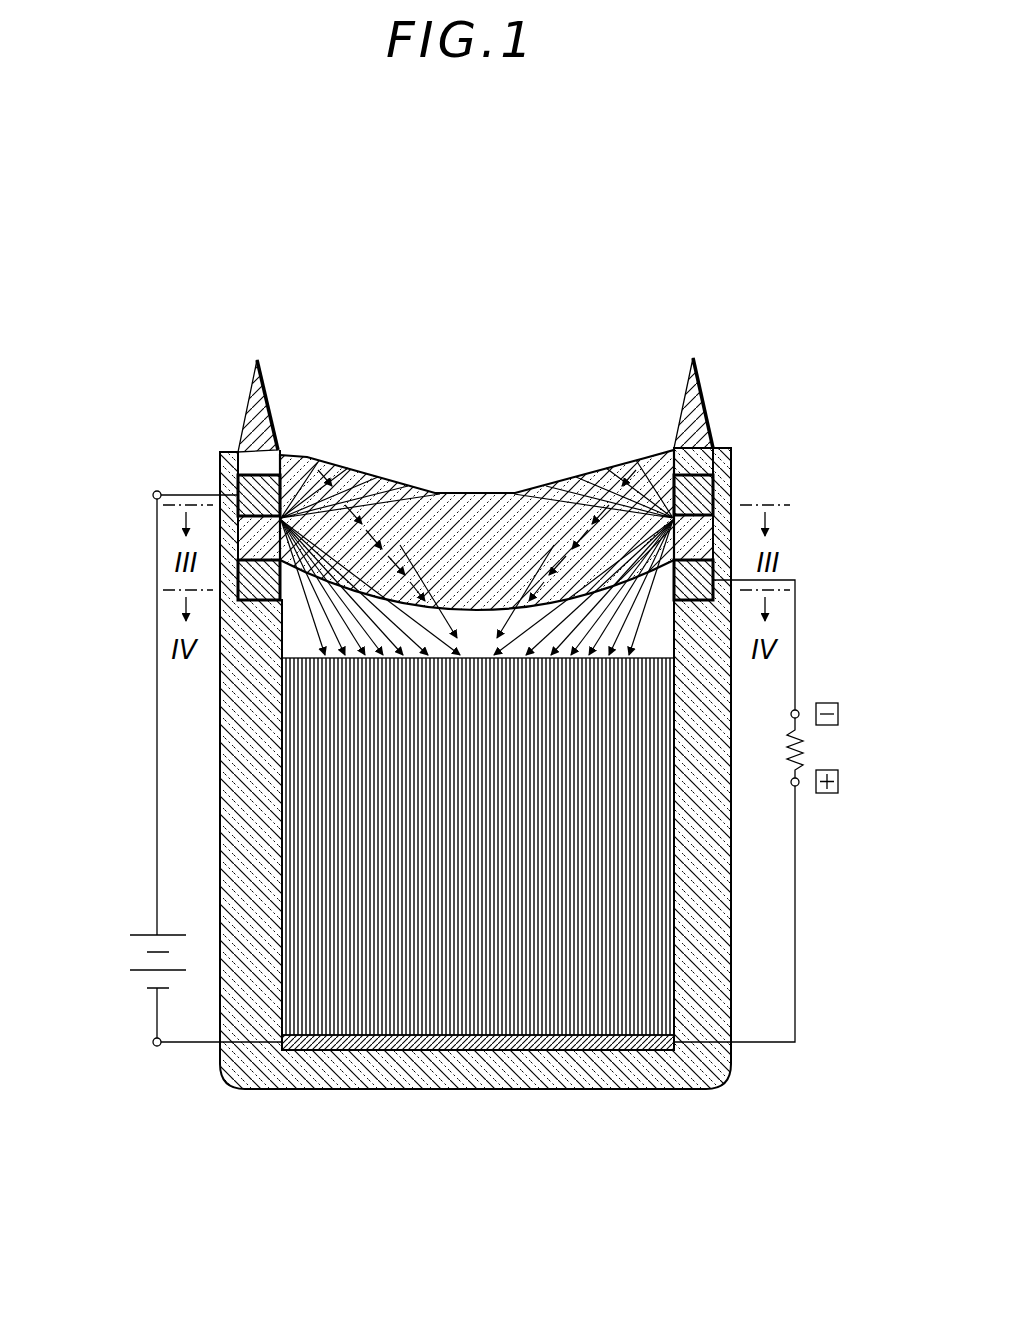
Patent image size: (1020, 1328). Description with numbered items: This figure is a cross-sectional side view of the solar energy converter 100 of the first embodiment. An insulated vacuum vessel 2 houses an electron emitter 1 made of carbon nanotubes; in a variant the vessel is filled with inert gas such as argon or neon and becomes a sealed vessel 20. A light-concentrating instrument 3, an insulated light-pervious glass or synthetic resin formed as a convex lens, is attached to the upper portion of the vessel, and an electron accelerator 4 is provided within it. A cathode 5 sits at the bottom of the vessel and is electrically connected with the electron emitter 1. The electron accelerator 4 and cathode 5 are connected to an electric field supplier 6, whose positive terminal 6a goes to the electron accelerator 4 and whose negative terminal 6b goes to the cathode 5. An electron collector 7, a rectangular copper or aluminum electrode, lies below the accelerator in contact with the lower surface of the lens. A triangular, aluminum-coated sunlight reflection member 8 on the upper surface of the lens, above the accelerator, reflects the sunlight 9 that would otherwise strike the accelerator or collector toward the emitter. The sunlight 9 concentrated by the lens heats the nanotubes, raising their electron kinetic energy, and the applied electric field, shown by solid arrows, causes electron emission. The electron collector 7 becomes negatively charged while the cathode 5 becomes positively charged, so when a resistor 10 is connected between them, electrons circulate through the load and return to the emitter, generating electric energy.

The solar energy converter 100 is at (452, 132).
The electron emitter 1 is at (360, 1051).
The vacuum vessel 2 is at (475, 1119).
The sealed vessel 20 is at (426, 1075).
The light-concentrating instrument 3 is at (394, 486).
The electron accelerator 4 is at (250, 470).
The cathode 5 is at (506, 1052).
The electric field supplier 6 is at (131, 956).
The positive terminal 6a is at (153, 495).
The negative terminal 6b is at (153, 1043).
The electron collector 7 is at (290, 598).
The sunlight reflection member 8 is at (247, 388).
The sunlight 9 is at (297, 445).
The resistor 10 is at (812, 752).